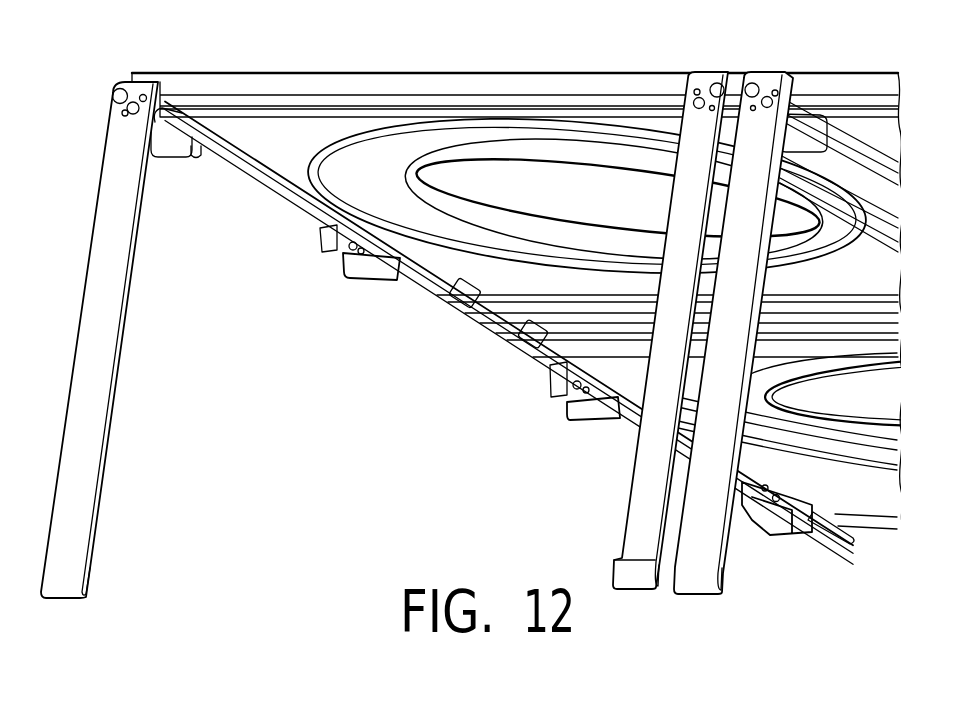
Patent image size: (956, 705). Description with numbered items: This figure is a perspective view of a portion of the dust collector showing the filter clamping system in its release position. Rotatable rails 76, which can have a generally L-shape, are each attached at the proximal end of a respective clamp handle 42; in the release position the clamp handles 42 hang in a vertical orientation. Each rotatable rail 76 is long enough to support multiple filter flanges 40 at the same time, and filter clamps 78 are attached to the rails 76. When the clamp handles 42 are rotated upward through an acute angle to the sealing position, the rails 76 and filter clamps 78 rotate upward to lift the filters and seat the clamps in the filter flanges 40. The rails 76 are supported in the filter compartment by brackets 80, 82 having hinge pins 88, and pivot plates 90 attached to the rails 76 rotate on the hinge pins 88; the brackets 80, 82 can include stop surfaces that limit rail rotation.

The filter flange 40 is at (376, 73).
The clamp handle 42 is at (100, 486).
The rotatable rail 76 is at (262, 179).
The filter clamp 78 is at (195, 150).
The bracket 80 is at (160, 158).
The bracket 82 is at (378, 280).
The hinge pin 88 is at (355, 247).
The pivot plate 90 is at (336, 248).